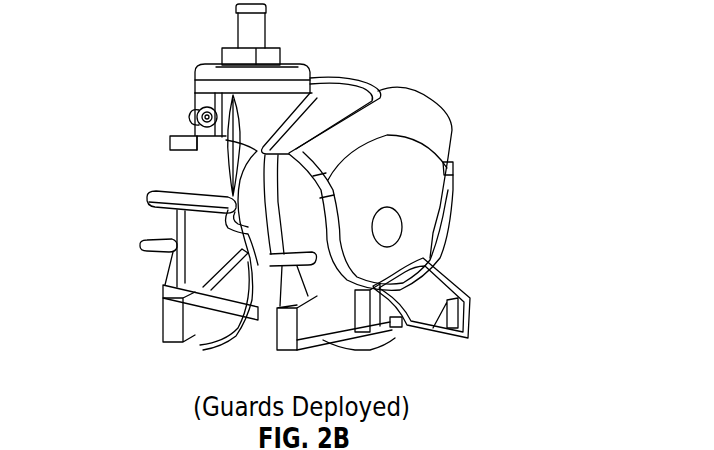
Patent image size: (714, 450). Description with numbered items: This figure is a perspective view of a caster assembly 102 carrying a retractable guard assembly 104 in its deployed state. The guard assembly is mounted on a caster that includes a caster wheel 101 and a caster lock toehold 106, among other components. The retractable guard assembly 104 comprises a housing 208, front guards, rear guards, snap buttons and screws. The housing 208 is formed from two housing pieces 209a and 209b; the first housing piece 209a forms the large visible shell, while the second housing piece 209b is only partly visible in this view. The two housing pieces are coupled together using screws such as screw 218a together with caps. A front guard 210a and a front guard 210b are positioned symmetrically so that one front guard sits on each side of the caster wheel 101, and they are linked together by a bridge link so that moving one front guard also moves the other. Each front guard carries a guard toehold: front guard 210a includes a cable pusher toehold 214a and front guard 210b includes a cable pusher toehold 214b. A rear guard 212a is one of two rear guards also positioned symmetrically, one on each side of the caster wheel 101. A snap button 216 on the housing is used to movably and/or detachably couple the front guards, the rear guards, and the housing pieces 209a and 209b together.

The caster wheel 101 is at (457, 223).
The caster assembly 102 is at (523, 34).
The retractable guard assembly 104 is at (183, 52).
The caster lock toehold 106 is at (150, 194).
The housing 208 is at (356, 81).
The housing piece 209a is at (420, 105).
The housing piece 209b is at (186, 130).
The front guard 210a is at (273, 340).
The front guard 210b is at (168, 320).
The rear guard 212a is at (468, 317).
The cable pusher toehold 214a is at (207, 330).
The cable pusher toehold 214b is at (140, 245).
The snap button 216 is at (386, 206).
The screw 218a is at (190, 106).